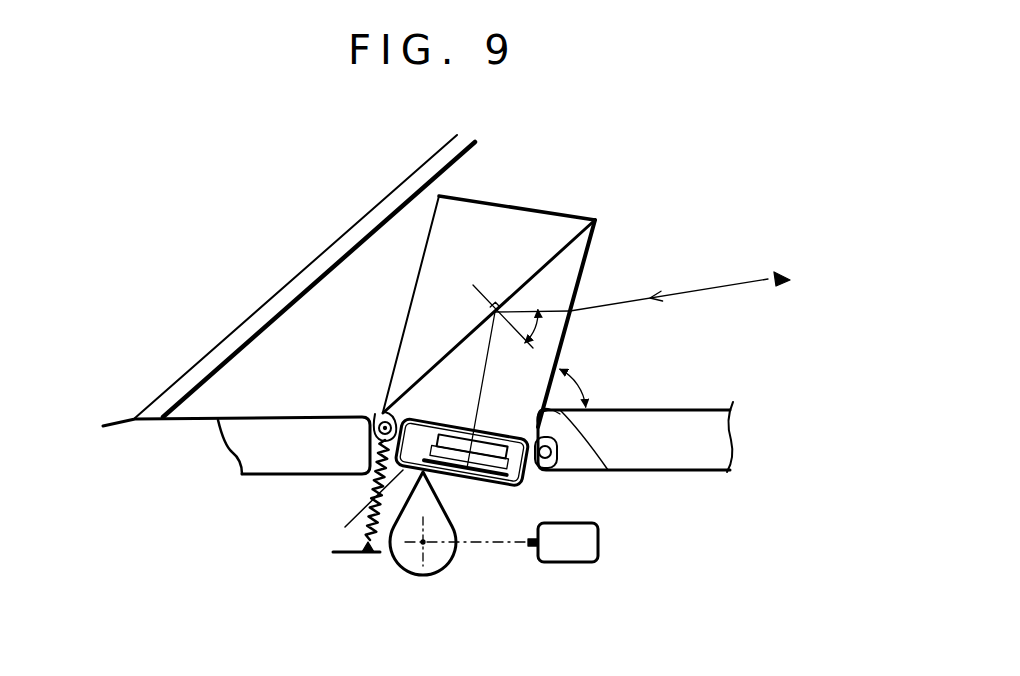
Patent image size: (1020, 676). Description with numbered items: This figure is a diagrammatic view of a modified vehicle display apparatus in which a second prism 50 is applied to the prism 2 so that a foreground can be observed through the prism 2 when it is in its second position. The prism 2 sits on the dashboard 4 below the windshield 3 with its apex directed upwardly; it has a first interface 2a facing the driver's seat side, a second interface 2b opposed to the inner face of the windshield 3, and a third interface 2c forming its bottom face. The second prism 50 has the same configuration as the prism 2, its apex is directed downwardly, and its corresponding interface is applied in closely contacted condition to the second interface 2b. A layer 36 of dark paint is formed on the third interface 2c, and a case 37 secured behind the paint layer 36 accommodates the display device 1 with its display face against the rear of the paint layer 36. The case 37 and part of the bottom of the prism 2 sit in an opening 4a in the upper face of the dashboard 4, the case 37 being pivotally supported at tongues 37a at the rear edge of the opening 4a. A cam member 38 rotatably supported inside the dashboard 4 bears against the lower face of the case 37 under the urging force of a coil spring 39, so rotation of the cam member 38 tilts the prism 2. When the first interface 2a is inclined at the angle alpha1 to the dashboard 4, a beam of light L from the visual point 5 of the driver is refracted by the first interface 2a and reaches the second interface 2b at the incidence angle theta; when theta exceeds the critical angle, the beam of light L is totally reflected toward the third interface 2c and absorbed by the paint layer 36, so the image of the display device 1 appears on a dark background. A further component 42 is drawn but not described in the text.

The display device 1 is at (468, 478).
The prism 2 is at (565, 277).
The first interface 2a is at (595, 240).
The second interface 2b is at (560, 247).
The third interface 2c is at (385, 412).
The windshield 3 is at (397, 202).
The dashboard 4 is at (697, 415).
The opening 4a is at (610, 472).
The visual point 5 is at (778, 275).
The beam of light L is at (690, 292).
The paint layer 36 is at (347, 510).
The case 37 is at (503, 483).
The tongues 37a is at (558, 470).
The cam member 38 is at (443, 560).
The coil spring 39 is at (370, 489).
The solenoid 42 is at (578, 548).
The second prism 50 is at (505, 227).
The incidence angle theta is at (540, 330).
The inclination angle alpha1 is at (584, 386).